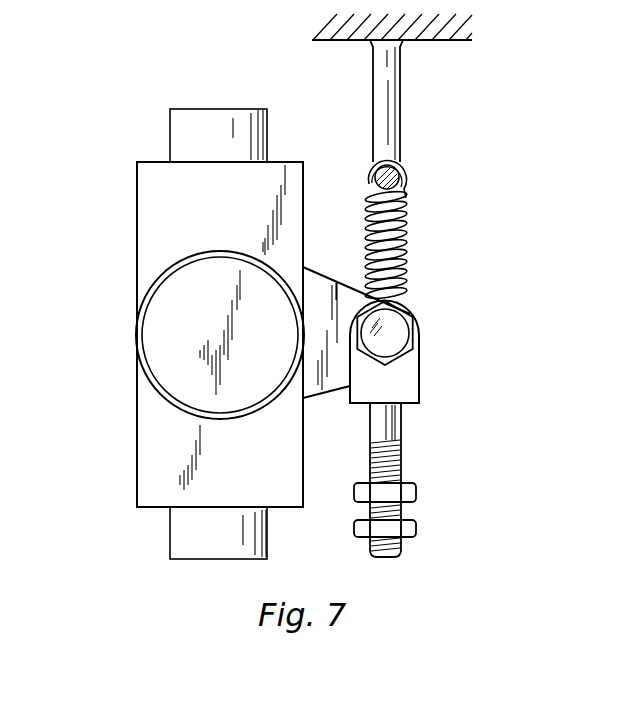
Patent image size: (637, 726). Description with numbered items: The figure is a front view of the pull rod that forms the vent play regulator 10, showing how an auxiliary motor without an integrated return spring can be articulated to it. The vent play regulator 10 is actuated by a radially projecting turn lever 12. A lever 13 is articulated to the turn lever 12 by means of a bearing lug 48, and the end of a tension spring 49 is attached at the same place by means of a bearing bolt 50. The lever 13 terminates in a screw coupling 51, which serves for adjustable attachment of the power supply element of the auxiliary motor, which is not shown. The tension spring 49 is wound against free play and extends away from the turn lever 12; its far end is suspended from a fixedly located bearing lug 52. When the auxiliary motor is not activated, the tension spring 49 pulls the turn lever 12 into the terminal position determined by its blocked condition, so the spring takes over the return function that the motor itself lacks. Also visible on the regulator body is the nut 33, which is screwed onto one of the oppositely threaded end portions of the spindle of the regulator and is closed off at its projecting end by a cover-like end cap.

The vent play regulator 10 is at (170, 334).
The turn lever 12 is at (313, 288).
The lever 13 is at (429, 421).
The nut 33 is at (152, 197).
The bearing lug 48 is at (411, 382).
The tension spring 49 is at (401, 233).
The bearing bolt 50 is at (400, 322).
The screw coupling 51 is at (430, 508).
The bearing lug 52 is at (392, 88).